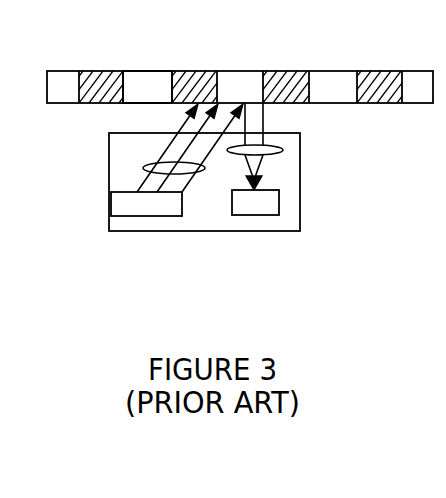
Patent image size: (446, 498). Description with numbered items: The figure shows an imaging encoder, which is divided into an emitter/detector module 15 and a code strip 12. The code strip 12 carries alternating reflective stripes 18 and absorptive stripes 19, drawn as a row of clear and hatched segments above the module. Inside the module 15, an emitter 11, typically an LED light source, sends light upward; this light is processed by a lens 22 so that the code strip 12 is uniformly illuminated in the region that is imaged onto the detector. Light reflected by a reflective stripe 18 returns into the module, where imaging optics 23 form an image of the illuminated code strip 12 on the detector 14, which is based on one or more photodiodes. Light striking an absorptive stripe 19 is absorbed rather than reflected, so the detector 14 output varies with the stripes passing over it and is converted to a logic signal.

The emitter 11 is at (157, 212).
The code strip 12 is at (246, 97).
The detector 14 is at (248, 210).
The emitter/detector module 15 is at (300, 212).
The reflective stripes 18 is at (147, 71).
The absorptive stripes 19 is at (93, 71).
The lens 22 is at (153, 163).
The imaging optics 23 is at (287, 148).